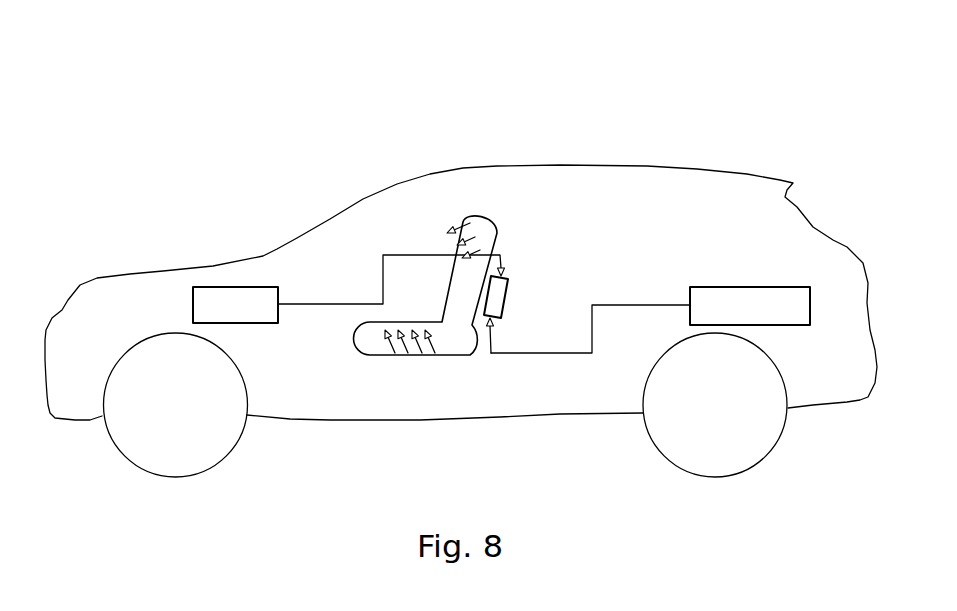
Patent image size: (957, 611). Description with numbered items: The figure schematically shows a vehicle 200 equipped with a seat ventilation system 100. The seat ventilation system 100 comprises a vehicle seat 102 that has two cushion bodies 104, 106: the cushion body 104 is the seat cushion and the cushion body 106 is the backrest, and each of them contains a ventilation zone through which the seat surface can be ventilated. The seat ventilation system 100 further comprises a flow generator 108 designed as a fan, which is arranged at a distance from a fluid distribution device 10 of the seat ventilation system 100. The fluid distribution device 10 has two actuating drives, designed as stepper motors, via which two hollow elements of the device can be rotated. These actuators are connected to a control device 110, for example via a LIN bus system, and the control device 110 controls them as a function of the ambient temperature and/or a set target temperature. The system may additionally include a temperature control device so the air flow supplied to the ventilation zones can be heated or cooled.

The vehicle 200 is at (676, 120).
The seat ventilation system 100 is at (413, 274).
The control device 110 is at (240, 303).
The flow generator 108 is at (763, 295).
The fluid distribution device 10 is at (500, 298).
The vehicle seat 102 is at (457, 342).
The cushion body 104 is at (373, 345).
The cushion body 106 is at (460, 270).